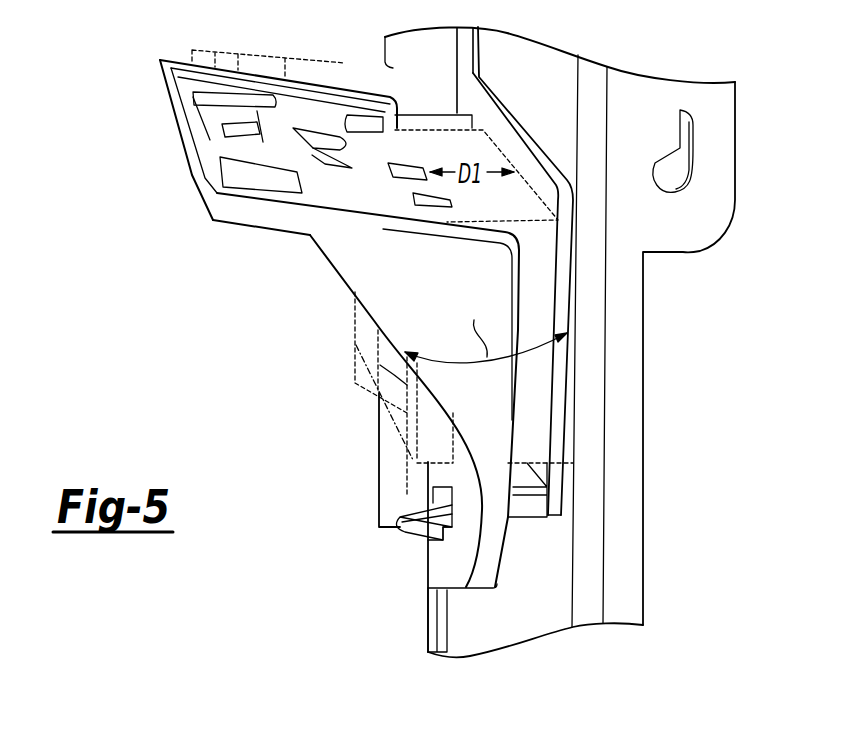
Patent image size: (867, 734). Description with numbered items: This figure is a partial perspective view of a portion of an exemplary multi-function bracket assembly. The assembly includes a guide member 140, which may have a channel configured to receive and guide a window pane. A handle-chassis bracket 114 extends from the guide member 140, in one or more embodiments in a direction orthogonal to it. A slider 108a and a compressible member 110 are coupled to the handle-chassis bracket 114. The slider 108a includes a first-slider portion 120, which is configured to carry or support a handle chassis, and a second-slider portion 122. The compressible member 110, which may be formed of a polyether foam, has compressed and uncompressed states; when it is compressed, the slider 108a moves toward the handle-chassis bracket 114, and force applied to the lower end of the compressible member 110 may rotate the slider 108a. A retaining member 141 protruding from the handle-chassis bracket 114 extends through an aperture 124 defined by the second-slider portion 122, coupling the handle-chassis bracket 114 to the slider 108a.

The first-slider portion 120 is at (178, 60).
The slider 108a is at (170, 151).
The handle-chassis bracket 114 is at (482, 100).
The compressible member 110 is at (533, 265).
The guide member 140 is at (617, 388).
The aperture 124 is at (443, 492).
The retaining member 141 is at (417, 537).
The second-slider portion 122 is at (442, 570).